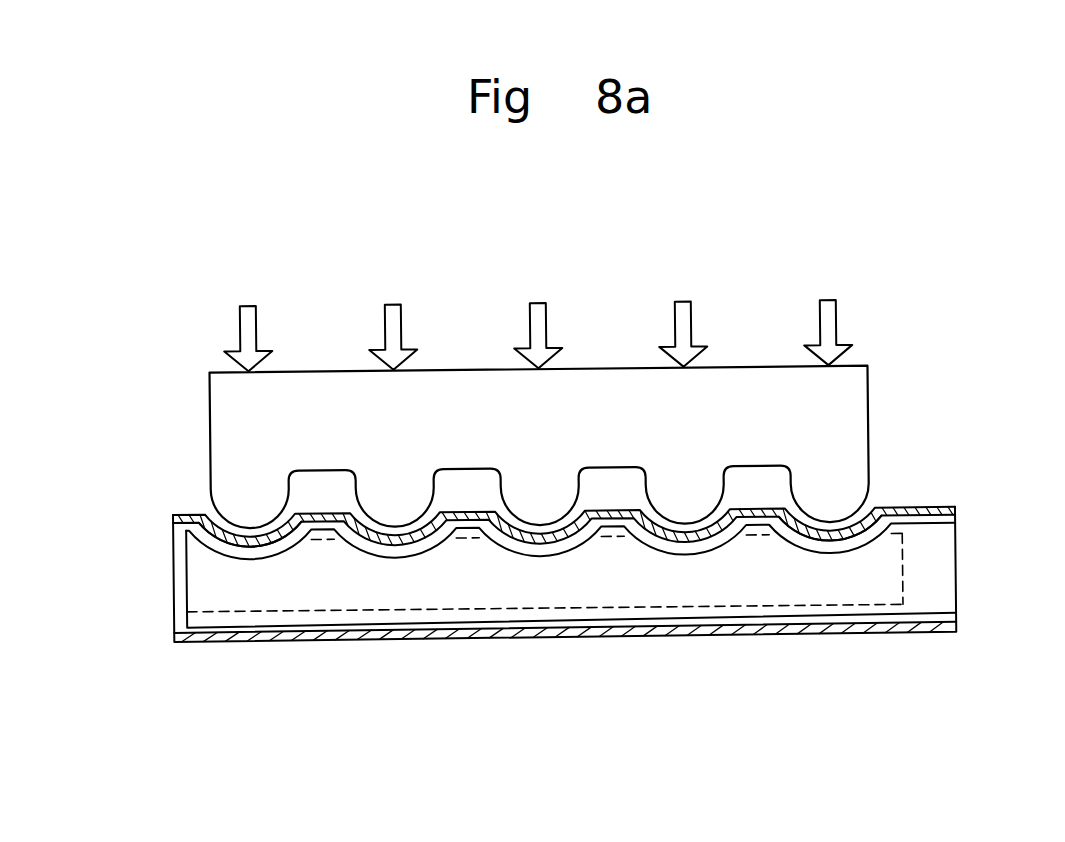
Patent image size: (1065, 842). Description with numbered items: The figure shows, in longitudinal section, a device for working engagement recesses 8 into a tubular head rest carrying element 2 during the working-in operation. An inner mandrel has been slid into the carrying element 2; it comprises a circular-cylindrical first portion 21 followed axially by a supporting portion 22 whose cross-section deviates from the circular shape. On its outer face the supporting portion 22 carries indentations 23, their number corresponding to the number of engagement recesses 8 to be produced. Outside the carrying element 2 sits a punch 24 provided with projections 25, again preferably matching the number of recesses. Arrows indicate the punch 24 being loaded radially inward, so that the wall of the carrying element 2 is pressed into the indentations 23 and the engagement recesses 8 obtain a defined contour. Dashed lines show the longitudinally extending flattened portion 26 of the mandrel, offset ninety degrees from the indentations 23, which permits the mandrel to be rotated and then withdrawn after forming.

The head rest carrying element 2 is at (325, 518).
The engagement recesses 8 is at (240, 548).
The first portion 21 is at (937, 545).
The supporting portion 22 is at (617, 568).
The indentations 23 is at (546, 556).
The punch 24 is at (457, 395).
The projections 25 is at (837, 523).
The flattened portion 26 is at (768, 605).